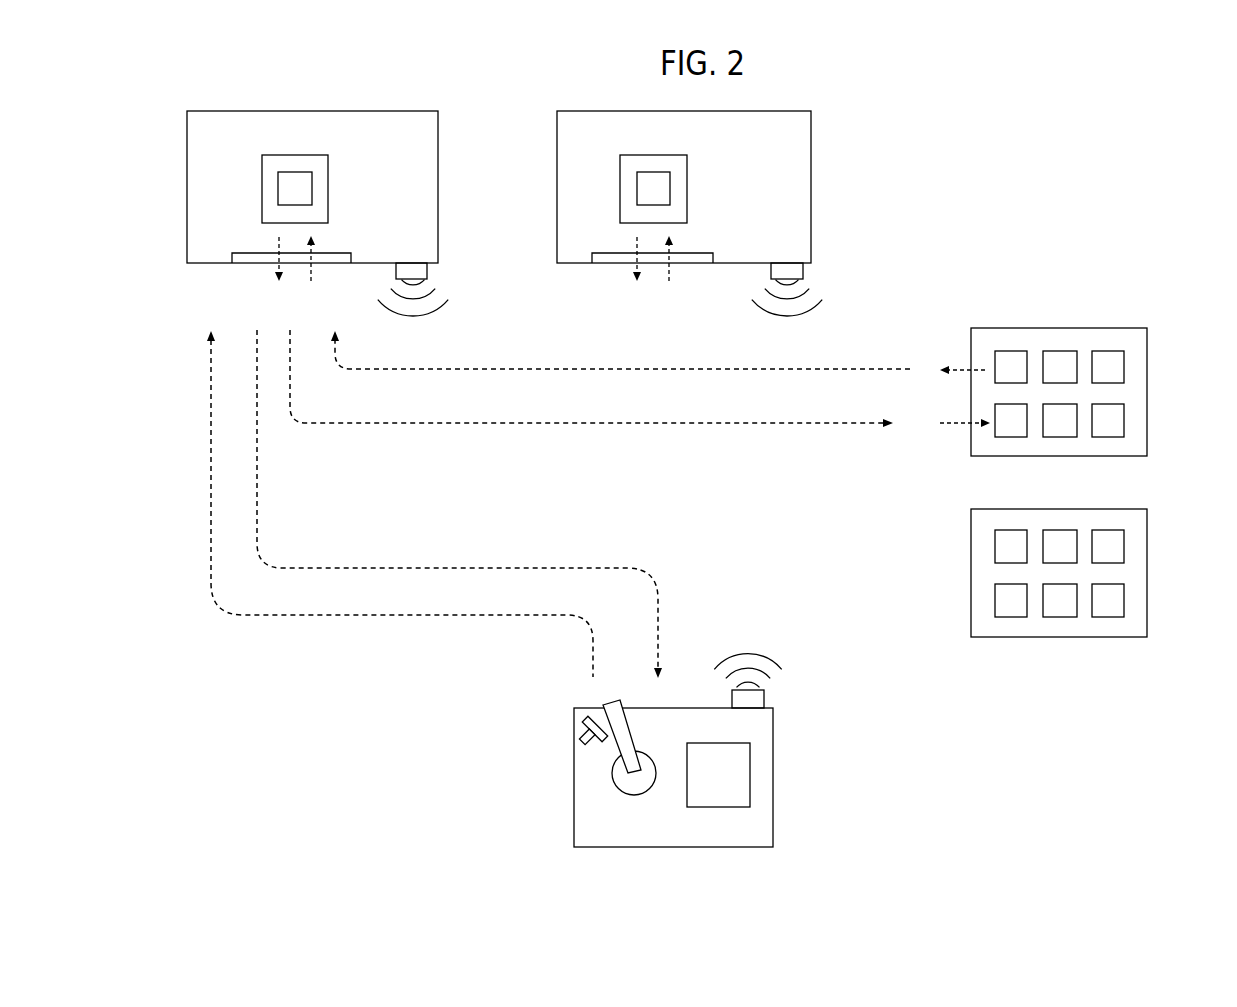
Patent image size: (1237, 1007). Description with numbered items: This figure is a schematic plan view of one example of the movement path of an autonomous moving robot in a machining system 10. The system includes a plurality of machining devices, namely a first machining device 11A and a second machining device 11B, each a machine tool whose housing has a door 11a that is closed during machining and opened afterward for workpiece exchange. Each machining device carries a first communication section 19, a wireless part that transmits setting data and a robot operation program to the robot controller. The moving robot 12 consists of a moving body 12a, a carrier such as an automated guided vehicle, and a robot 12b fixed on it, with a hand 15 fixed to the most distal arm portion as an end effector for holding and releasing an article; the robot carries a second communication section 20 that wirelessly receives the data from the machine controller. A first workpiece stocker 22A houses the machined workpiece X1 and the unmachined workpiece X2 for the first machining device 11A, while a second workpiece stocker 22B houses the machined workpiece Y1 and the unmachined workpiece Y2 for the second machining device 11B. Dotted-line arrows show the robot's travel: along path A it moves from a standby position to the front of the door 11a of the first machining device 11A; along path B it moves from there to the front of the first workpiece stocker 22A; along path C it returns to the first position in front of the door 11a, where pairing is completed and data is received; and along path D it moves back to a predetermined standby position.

The machining system 10 is at (980, 138).
The first machining device 11A is at (652, 303).
The second machining device 11B is at (831, 401).
The door 11a is at (243, 258).
The first communication section 19 is at (422, 272).
The moving robot 12 is at (650, 750).
The moving body 12a is at (574, 808).
The robot 12b is at (622, 746).
The hand 15 is at (551, 726).
The second communication section 20 is at (762, 700).
The first workpiece stocker 22A is at (1080, 362).
The second workpiece stocker 22B is at (1096, 549).
The machined workpiece X1 is at (290, 187).
The unmachined workpiece X2 is at (1103, 360).
The machined workpiece Y1 is at (650, 181).
The unmachined workpiece Y2 is at (1103, 540).
The path A is at (312, 615).
The path B is at (582, 423).
The path C is at (582, 369).
The path D is at (410, 568).